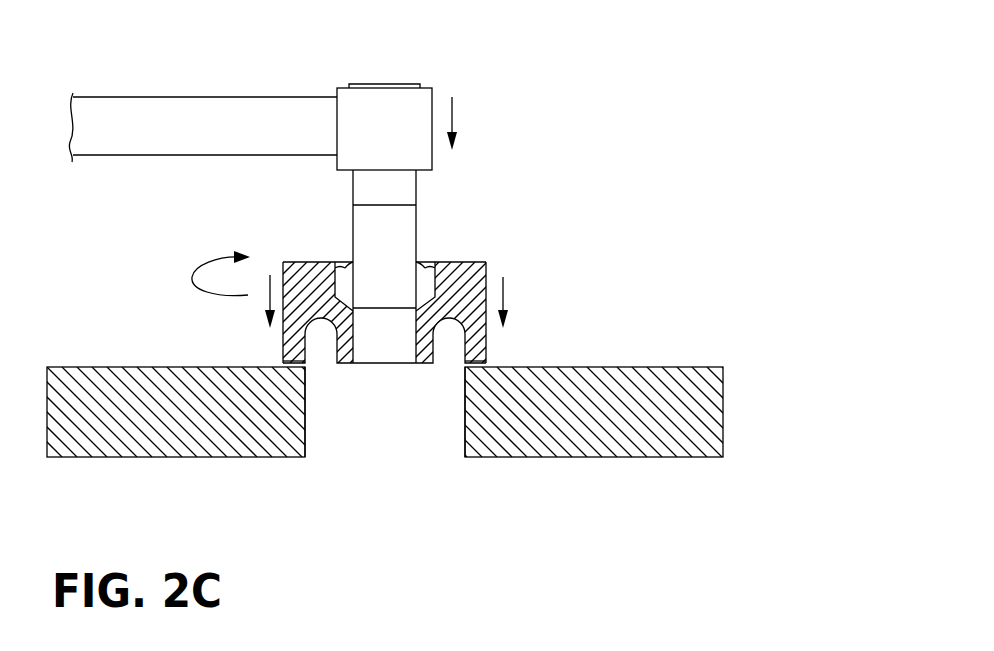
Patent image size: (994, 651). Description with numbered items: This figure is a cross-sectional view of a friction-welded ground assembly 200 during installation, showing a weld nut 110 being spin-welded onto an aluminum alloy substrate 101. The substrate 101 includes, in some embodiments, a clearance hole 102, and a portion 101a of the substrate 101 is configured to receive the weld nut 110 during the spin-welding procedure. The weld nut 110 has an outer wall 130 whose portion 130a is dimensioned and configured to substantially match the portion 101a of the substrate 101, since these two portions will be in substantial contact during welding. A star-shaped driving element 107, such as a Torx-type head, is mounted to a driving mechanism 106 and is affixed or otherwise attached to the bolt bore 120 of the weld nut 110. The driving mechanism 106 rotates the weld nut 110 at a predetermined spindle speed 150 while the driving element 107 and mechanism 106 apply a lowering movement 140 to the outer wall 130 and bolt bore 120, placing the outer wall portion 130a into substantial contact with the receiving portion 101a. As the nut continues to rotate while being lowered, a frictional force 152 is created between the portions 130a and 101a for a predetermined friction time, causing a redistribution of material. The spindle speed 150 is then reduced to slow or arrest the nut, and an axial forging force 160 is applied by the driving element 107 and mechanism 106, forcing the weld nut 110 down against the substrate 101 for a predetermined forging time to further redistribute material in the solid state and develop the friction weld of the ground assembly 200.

The spin-welded electrical ground assembly 200 is at (774, 114).
The driving mechanism 106 is at (396, 84).
The star-shaped driving element 107 is at (382, 222).
The lowering movement 140 is at (475, 123).
The weld nut 110 is at (510, 255).
The outer wall 130 is at (468, 312).
The portion of the outer wall 130a is at (488, 352).
The axial forging force 160 is at (384, 304).
The spindle speed 150 is at (198, 273).
The frictional force 152 is at (281, 366).
The aluminum alloy substrate 101 is at (697, 383).
The portion of the substrate 101a is at (296, 380).
The bolt bore 120 is at (380, 373).
The clearance hole 102 is at (397, 458).